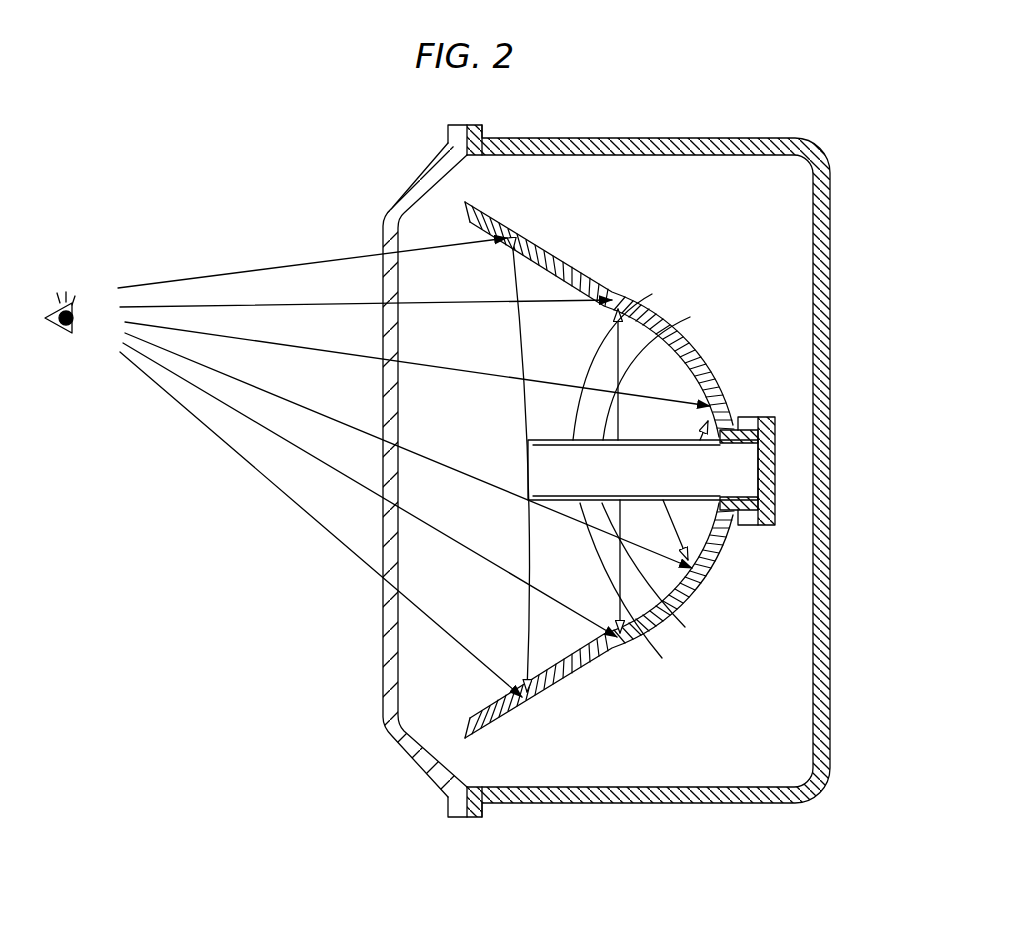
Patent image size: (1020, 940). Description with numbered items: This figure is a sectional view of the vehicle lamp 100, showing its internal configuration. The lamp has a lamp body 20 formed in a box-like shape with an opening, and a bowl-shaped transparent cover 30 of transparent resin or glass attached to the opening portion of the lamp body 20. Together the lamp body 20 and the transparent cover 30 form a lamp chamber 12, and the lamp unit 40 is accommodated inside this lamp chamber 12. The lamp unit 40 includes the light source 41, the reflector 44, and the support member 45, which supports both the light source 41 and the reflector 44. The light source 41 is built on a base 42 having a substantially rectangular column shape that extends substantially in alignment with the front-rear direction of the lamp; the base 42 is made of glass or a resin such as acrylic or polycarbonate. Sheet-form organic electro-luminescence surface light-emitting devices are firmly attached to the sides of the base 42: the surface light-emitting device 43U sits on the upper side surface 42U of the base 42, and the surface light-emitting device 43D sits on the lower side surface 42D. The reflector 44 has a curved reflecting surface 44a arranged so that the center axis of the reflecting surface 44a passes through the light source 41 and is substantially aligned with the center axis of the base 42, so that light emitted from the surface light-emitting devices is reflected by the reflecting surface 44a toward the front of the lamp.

The vehicle lamp 100 is at (612, 897).
The lamp chamber 12 is at (793, 196).
The lamp body 20 is at (830, 260).
The transparent cover 30 is at (382, 231).
The lamp unit 40 is at (644, 262).
The light source 41 is at (495, 414).
The base 42 is at (528, 458).
The upper side surface 42U is at (662, 367).
The lower side surface 42D is at (664, 576).
The surface light-emitting device 43U is at (627, 356).
The surface light-emitting device 43D is at (641, 592).
The reflector 44 is at (535, 243).
The reflecting surface 44a is at (484, 226).
The support member 45 is at (746, 418).